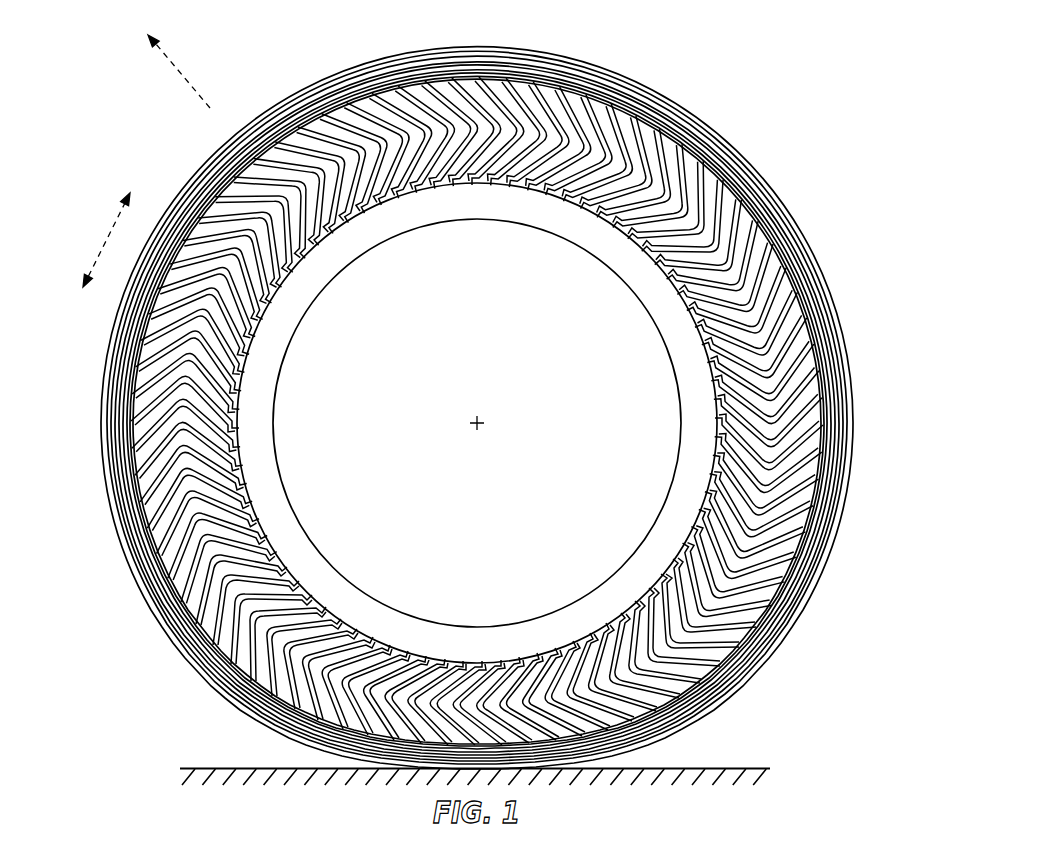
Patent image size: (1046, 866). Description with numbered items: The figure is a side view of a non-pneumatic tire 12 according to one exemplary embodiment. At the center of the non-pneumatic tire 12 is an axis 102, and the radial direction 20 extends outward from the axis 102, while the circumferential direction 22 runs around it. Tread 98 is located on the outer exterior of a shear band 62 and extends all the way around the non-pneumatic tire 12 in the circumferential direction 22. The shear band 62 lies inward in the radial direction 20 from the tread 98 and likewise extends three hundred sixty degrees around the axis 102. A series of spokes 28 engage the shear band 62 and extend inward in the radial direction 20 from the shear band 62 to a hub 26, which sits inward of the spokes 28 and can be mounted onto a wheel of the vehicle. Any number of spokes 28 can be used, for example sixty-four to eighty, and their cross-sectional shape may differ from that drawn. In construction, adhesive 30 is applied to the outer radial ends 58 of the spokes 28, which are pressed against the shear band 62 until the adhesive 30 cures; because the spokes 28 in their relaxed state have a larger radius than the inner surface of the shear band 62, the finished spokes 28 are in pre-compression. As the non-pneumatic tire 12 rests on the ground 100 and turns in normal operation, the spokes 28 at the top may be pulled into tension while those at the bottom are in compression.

The non-pneumatic tire 12 is at (509, 401).
The radial direction 20 is at (177, 72).
The circumferential direction 22 is at (108, 235).
The hub 26 is at (273, 507).
The spokes 28 is at (798, 370).
The adhesive 30 is at (815, 510).
The outer radial ends 58 is at (800, 285).
The shear band 62 is at (758, 643).
The tread 98 is at (680, 107).
The ground 100 is at (743, 765).
The axis 102 is at (475, 428).